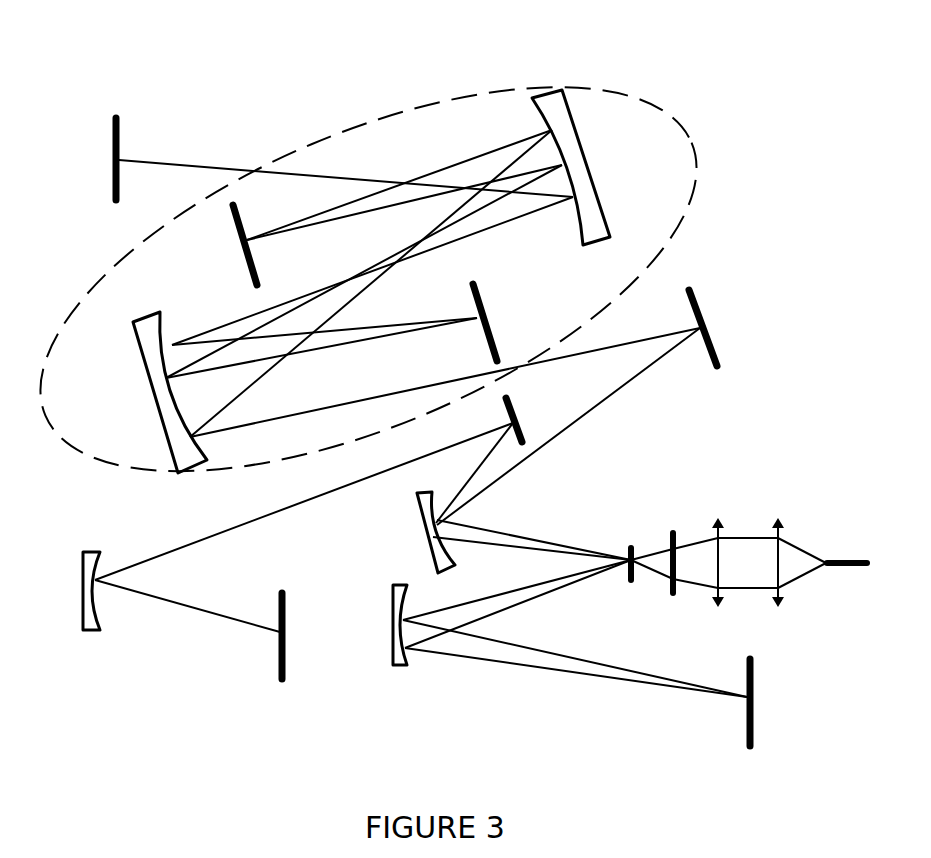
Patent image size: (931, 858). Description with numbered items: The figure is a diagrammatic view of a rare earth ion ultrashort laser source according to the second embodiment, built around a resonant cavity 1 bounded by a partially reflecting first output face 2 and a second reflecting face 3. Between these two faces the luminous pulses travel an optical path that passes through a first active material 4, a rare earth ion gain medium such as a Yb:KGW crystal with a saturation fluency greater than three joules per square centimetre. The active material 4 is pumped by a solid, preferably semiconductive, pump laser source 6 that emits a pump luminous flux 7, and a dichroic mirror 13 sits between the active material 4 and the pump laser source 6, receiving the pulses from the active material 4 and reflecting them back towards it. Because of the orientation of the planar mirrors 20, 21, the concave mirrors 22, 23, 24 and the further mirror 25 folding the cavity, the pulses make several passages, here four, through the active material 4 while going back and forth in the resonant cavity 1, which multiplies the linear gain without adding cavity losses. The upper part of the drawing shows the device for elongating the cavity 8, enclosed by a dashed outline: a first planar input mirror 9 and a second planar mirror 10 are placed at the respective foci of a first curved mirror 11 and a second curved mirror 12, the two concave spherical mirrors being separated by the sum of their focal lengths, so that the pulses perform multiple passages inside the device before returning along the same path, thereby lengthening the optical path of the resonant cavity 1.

The resonant cavity 1 is at (814, 106).
The first output face 2 is at (113, 140).
The second reflecting face 3 is at (287, 672).
The first active material 4 is at (631, 547).
The pump laser source 6 is at (845, 560).
The pump luminous flux 7 is at (800, 577).
The device for elongating the cavity 8 is at (661, 106).
The first planar input mirror 9 is at (257, 280).
The second planar mirror 10 is at (488, 328).
The first curved mirror 11 is at (602, 228).
The second curved mirror 12 is at (152, 386).
The dichroic mirror 13 is at (673, 532).
The planar mirror 20 is at (700, 292).
The planar mirror 21 is at (753, 675).
The concave mirror 22 is at (414, 535).
The concave mirror 23 is at (390, 618).
The concave mirror 24 is at (82, 586).
The mirror 25 is at (525, 423).